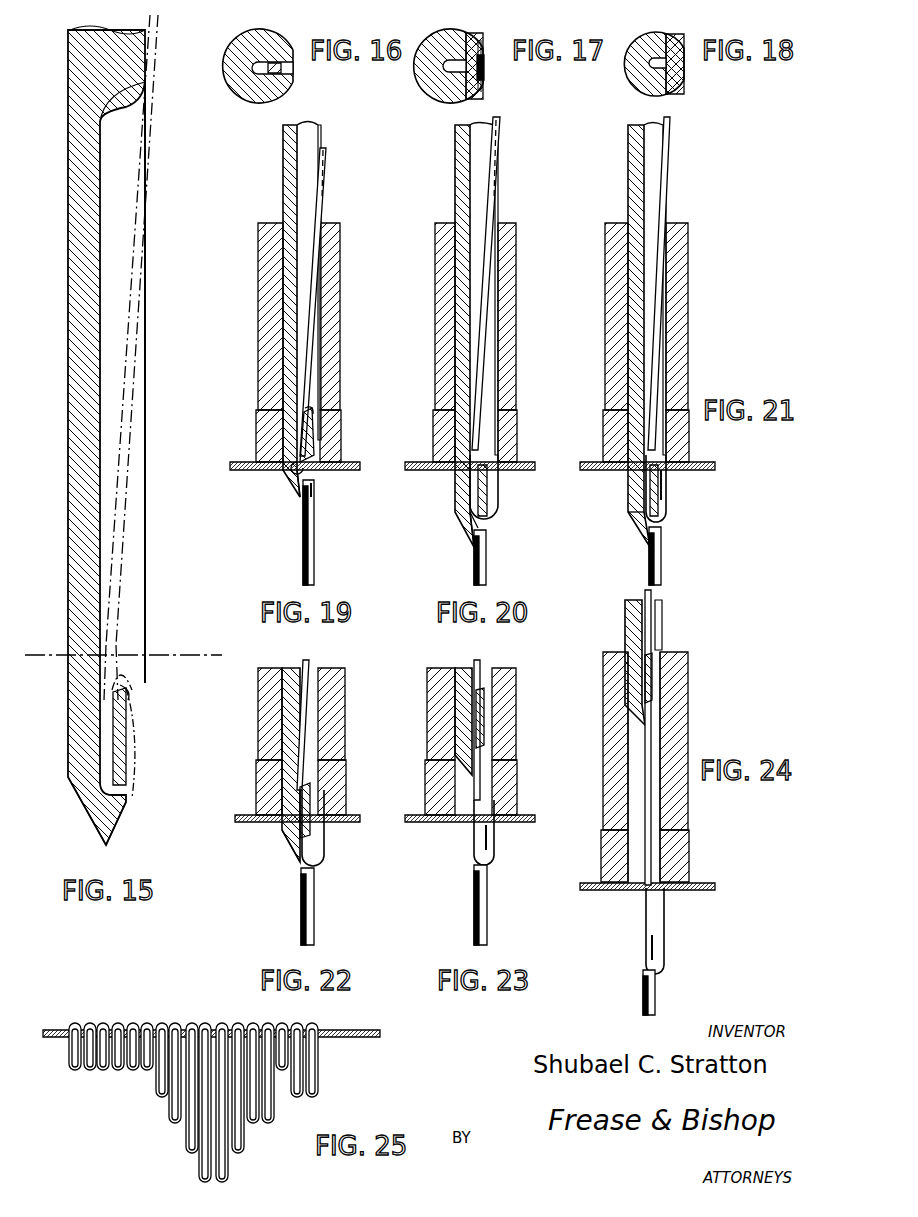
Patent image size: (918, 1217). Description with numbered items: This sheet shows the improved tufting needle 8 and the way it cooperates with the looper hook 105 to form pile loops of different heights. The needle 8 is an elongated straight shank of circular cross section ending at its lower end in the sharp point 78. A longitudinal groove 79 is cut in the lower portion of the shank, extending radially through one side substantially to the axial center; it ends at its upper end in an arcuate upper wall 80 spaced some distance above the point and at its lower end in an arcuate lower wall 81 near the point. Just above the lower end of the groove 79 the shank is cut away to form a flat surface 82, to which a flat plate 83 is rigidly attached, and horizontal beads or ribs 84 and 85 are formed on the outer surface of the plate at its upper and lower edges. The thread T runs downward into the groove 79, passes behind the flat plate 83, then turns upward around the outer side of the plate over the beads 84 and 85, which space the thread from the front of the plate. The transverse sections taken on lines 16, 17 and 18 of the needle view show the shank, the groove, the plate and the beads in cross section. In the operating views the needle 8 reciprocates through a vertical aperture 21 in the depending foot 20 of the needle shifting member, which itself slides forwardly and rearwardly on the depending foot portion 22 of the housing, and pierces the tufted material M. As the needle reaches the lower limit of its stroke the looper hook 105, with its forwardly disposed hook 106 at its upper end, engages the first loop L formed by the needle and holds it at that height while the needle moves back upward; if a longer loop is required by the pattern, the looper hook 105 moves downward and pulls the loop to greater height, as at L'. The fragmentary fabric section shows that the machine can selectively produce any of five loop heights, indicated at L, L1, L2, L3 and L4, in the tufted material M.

In FIG. 15, the needle 8 is at (67, 388).
In FIG. 16, the needle 8 is at (232, 52).
In FIG. 17, the needle 8 is at (432, 52).
In FIG. 18, the needle 8 is at (668, 30).
In FIG. 19, the needle 8 is at (282, 195).
In FIG. 20, the needle 8 is at (454, 194).
In FIG. 21, the needle 8 is at (627, 190).
In FIG. 22, the needle 8 is at (283, 667).
In FIG. 23, the needle 8 is at (456, 667).
In FIG. 24, the needle 8 is at (624, 620).
In FIG. 15, the sharp point 78 is at (104, 843).
In FIG. 19, the sharp point 78 is at (298, 496).
In FIG. 20, the sharp point 78 is at (472, 545).
In FIG. 22, the sharp point 78 is at (291, 845).
In FIG. 15, the longitudinal groove 79 is at (115, 295).
In FIG. 16, the longitudinal groove 79 is at (262, 72).
In FIG. 17, the longitudinal groove 79 is at (448, 78).
In FIG. 18, the longitudinal groove 79 is at (648, 74).
In FIG. 19, the longitudinal groove 79 is at (300, 140).
In FIG. 15, the arcuate upper wall 80 is at (128, 90).
In FIG. 20, the arcuate upper wall 80 is at (486, 138).
In FIG. 21, the arcuate upper wall 80 is at (662, 136).
In FIG. 15, the arcuate lower wall 81 is at (118, 815).
In FIG. 20, the arcuate lower wall 81 is at (482, 531).
In FIG. 15, the flat surface 82 is at (112, 702).
In FIG. 17, the flat surface 82 is at (478, 44).
In FIG. 15, the flat plate 83 is at (126, 712).
In FIG. 16, the flat plate 83 is at (284, 68).
In FIG. 17, the flat plate 83 is at (485, 88).
In FIG. 19, the flat plate 83 is at (314, 440).
In FIG. 20, the flat plate 83 is at (486, 495).
In FIG. 21, the flat plate 83 is at (656, 500).
In FIG. 22, the flat plate 83 is at (311, 800).
In FIG. 23, the flat plate 83 is at (486, 718).
In FIG. 24, the flat plate 83 is at (655, 668).
In FIG. 15, the upper bead or rib 84 is at (122, 690).
In FIG. 19, the upper bead or rib 84 is at (312, 415).
In FIG. 15, the lower bead or rib 85 is at (128, 790).
In FIG. 17, the lower bead or rib 85 is at (484, 70).
In FIG. 18, the lower bead or rib 85 is at (680, 82).
In FIG. 21, the lower bead or rib 85 is at (646, 517).
In FIG. 19, the depending foot 20 is at (258, 348).
In FIG. 20, the depending foot 20 is at (435, 343).
In FIG. 21, the depending foot 20 is at (605, 338).
In FIG. 22, the depending foot 20 is at (337, 718).
In FIG. 23, the depending foot 20 is at (508, 700).
In FIG. 24, the depending foot 20 is at (682, 692).
In FIG. 24, the vertical apertures 21 is at (661, 792).
In FIG. 19, the depending foot portion of the housing 22 is at (256, 436).
In FIG. 20, the depending foot portion of the housing 22 is at (440, 432).
In FIG. 21, the depending foot portion of the housing 22 is at (612, 433).
In FIG. 22, the depending foot portion of the housing 22 is at (340, 776).
In FIG. 23, the depending foot portion of the housing 22 is at (514, 776).
In FIG. 24, the depending foot portion of the housing 22 is at (690, 836).
In FIG. 19, the looper hook 105 is at (315, 548).
In FIG. 20, the looper hook 105 is at (487, 560).
In FIG. 21, the looper hook 105 is at (662, 560).
In FIG. 22, the looper hook 105 is at (315, 905).
In FIG. 23, the looper hook 105 is at (488, 905).
In FIG. 24, the looper hook 105 is at (656, 985).
In FIG. 19, the forwardly disposed hook 106 is at (314, 495).
In FIG. 21, the forwardly disposed hook 106 is at (662, 487).
In FIG. 23, the forwardly disposed hook 106 is at (492, 841).
In FIG. 24, the forwardly disposed hook 106 is at (656, 955).
In FIG. 15, the thread T is at (132, 410).
In FIG. 19, the thread T is at (318, 210).
In FIG. 20, the thread T is at (495, 210).
In FIG. 21, the thread T is at (668, 210).
In FIG. 22, the thread T is at (310, 664).
In FIG. 23, the thread T is at (482, 662).
In FIG. 24, the thread T is at (648, 612).
In FIG. 19, the tufted material M is at (240, 471).
In FIG. 20, the tufted material M is at (416, 471).
In FIG. 21, the tufted material M is at (592, 471).
In FIG. 22, the tufted material M is at (240, 823).
In FIG. 23, the tufted material M is at (428, 823).
In FIG. 24, the tufted material M is at (598, 891).
In FIG. 25, the tufted material M is at (355, 1031).
In FIG. 21, the loop L is at (688, 499).
In FIG. 22, the loop L is at (336, 833).
In FIG. 23, the loop L is at (505, 837).
In FIG. 25, the loop L is at (163, 1077).
In FIG. 24, the loop pulled to greater height L' is at (679, 931).
In FIG. 25, the loop of second height L1 is at (155, 1088).
In FIG. 25, the loop of third height L2 is at (172, 1120).
In FIG. 25, the loop of fourth height L3 is at (188, 1150).
In FIG. 25, the loop of fifth height L4 is at (230, 1175).
In FIG. 15, the section line 16— 16 is at (68, 188).
In FIG. 15, the section line 17— 17 is at (66, 729).
In FIG. 15, the section line 18— 18 is at (66, 781).